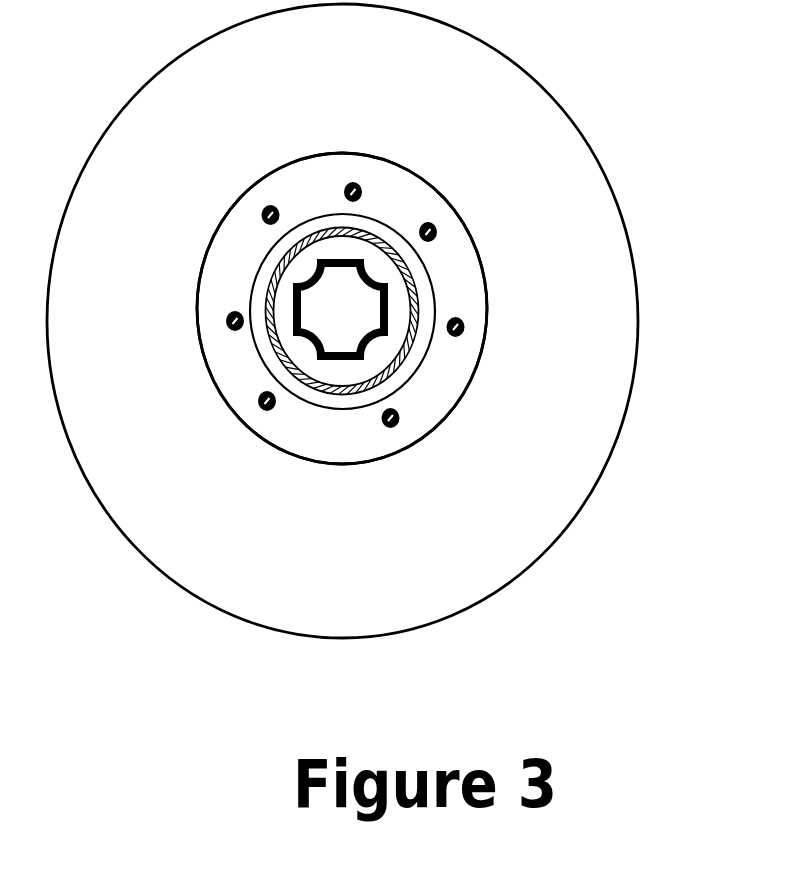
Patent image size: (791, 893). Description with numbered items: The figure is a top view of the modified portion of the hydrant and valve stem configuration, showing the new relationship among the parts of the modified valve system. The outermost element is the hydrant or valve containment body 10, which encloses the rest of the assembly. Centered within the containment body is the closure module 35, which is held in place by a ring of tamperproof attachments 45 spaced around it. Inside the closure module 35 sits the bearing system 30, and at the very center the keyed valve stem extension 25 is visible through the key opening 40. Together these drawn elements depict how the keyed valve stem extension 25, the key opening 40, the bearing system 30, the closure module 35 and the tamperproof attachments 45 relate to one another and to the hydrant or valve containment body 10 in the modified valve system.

The hydrant or valve containment body 10 is at (352, 88).
The keyed valve stem extension 25 is at (342, 255).
The bearing system 30 is at (418, 288).
The closure module 35 is at (310, 200).
The key opening 40 is at (487, 304).
The tamperproof attachments 45 is at (398, 412).